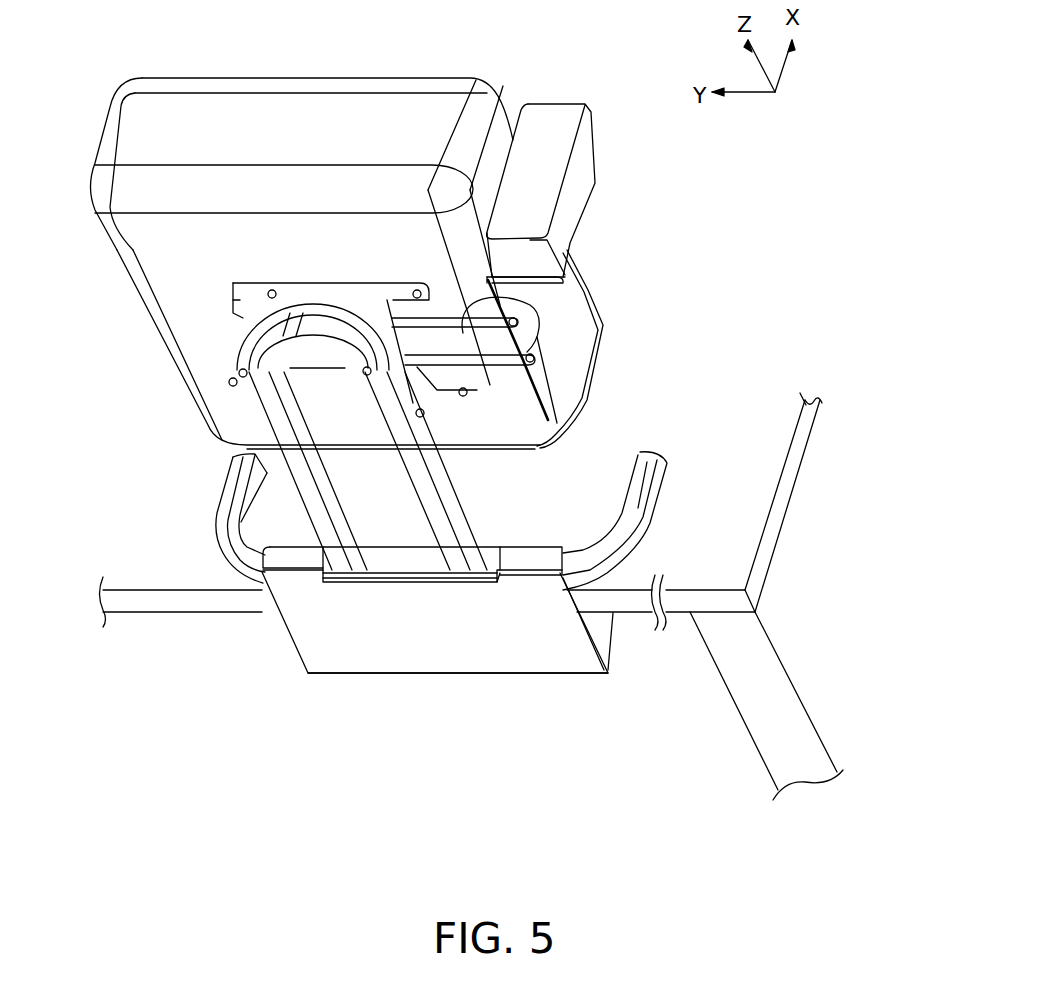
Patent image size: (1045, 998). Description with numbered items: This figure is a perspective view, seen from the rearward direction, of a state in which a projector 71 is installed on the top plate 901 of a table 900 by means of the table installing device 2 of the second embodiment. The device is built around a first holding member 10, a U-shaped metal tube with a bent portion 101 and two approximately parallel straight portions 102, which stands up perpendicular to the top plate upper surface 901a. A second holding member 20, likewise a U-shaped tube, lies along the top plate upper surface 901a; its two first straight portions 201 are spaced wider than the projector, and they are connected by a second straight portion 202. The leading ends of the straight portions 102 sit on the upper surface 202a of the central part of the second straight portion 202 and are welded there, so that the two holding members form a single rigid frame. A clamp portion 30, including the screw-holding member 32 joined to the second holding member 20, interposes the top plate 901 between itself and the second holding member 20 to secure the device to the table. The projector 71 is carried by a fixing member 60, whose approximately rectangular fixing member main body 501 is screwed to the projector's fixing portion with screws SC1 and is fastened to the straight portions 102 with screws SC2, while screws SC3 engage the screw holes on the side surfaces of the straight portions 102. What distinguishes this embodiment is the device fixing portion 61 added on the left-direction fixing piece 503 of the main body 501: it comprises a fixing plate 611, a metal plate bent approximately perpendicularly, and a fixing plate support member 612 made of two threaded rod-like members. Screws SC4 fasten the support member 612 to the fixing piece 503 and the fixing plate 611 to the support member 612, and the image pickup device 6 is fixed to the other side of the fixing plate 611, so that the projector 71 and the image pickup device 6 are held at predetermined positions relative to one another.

The table installing device 2 is at (185, 487).
The image pickup device 6 is at (555, 108).
The first holding member 10 is at (482, 478).
The second holding member 20 is at (662, 530).
The clamp portion 30 is at (540, 700).
The screw-holding member 32 is at (330, 665).
The fixing member 60 is at (245, 275).
The device fixing portion 61 is at (552, 383).
The projector 71 is at (355, 79).
The bent portion 101 is at (325, 310).
The straight portions 102 is at (345, 515).
The first straight portions 201 is at (218, 522).
The second straight portion 202 is at (375, 562).
The upper surface 202a is at (420, 560).
The fixing member main body 501 is at (345, 300).
The fixing piece 503 is at (447, 292).
The fixing plate 611 is at (520, 287).
The fixing plate support member 612 is at (520, 300).
The table 900 is at (822, 494).
The top plate 901 is at (795, 392).
The top plate upper surface 901a is at (745, 388).
The screw SC1 is at (272, 290).
The screw SC2 is at (240, 393).
The screw SC3 is at (428, 414).
The screw SC4 is at (518, 323).